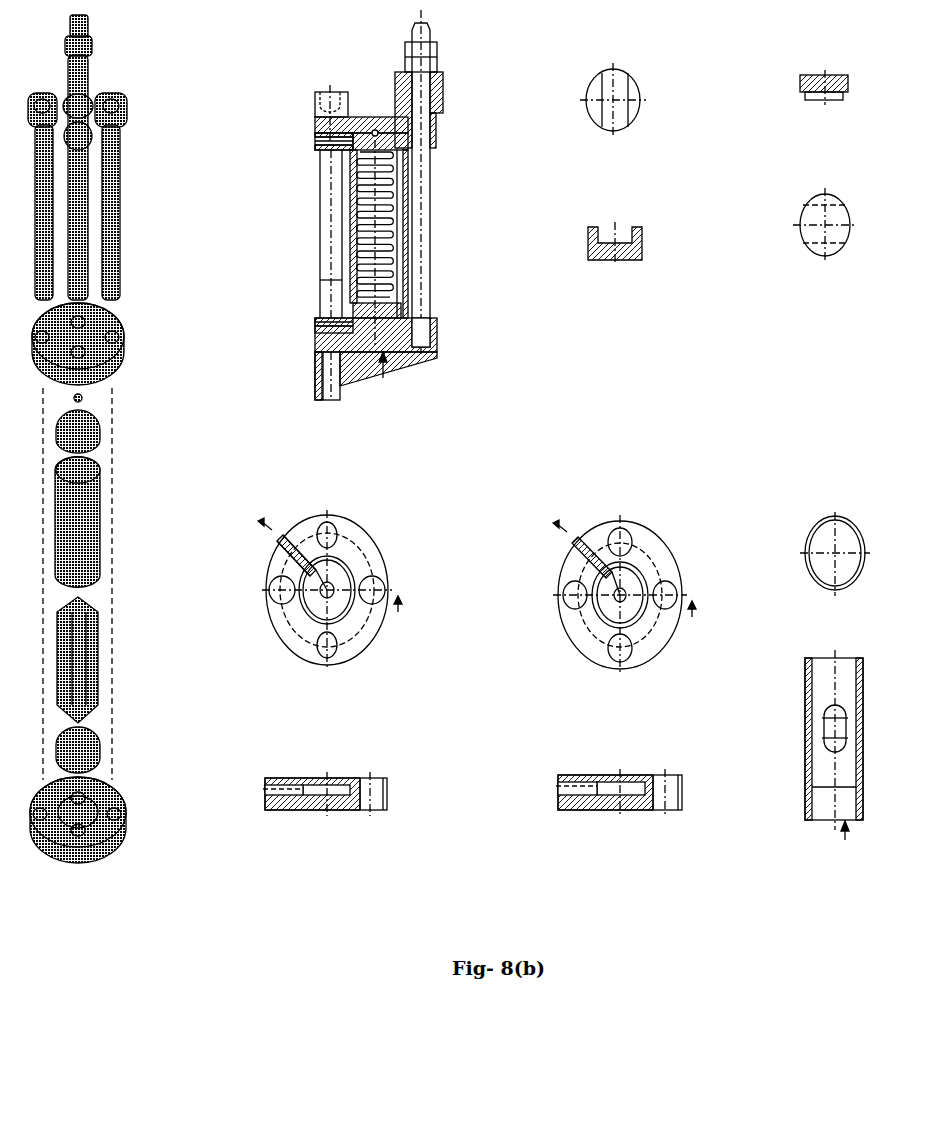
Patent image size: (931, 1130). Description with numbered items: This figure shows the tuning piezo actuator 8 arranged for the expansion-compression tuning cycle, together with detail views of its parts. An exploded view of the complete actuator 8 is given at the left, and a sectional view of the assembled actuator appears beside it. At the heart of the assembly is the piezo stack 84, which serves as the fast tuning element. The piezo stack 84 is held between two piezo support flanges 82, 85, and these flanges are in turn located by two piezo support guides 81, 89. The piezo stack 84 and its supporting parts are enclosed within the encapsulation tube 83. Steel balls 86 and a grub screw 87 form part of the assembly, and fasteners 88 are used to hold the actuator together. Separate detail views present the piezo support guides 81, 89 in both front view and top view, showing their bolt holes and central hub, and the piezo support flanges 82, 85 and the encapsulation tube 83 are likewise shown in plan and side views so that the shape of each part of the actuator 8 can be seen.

The tuning piezo actuator 8 is at (104, 597).
The piezo support guide 81 is at (317, 125).
The piezo support flange 82 is at (352, 155).
The encapsulation tube 83 is at (348, 187).
The piezo stack 84 is at (358, 220).
The piezo support flange 85 is at (352, 320).
The steel balls 86 is at (325, 333).
The grub screw 87 is at (318, 340).
The fasteners 88 is at (412, 70).
The piezo support guide 89 is at (435, 330).